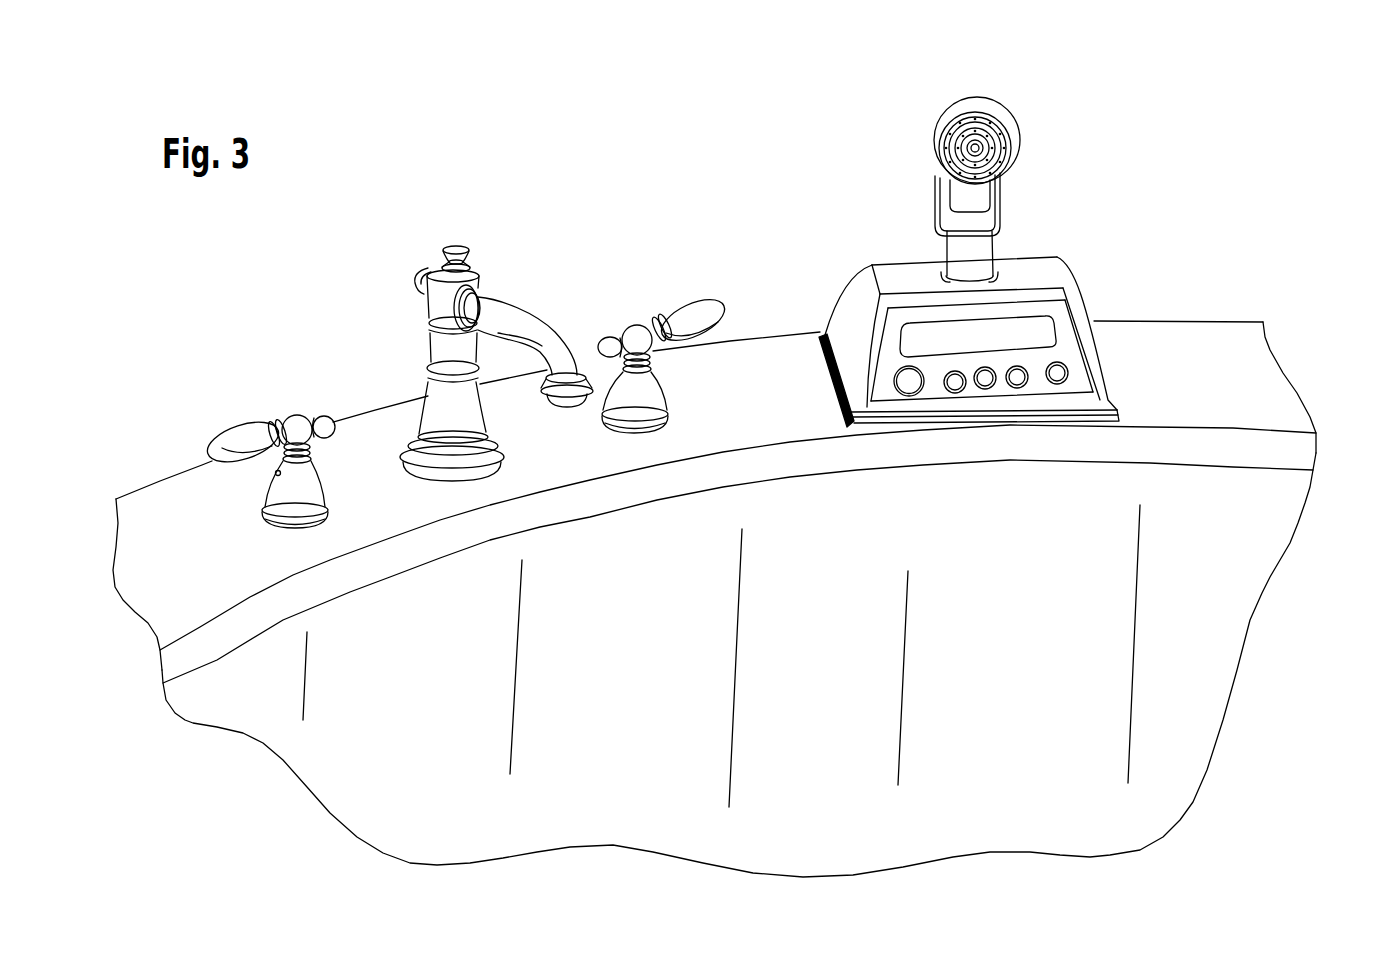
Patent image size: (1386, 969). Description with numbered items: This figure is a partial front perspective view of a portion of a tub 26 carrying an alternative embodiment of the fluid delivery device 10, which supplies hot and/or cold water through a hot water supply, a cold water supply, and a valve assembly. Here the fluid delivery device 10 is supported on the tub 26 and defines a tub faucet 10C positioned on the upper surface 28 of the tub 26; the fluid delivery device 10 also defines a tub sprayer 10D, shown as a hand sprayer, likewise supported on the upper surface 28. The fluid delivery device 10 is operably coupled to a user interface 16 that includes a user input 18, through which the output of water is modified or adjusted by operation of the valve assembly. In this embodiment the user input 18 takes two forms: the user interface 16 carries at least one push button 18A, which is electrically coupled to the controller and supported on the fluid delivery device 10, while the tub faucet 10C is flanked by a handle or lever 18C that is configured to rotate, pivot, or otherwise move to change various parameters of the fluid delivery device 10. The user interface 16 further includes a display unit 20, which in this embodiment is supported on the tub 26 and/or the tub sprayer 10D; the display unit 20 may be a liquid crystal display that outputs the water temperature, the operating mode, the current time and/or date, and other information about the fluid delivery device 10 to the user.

The fluid delivery device 10 is at (702, 281).
The tub faucet 10C is at (530, 325).
The tub sprayer 10D is at (945, 143).
The user interface 16 is at (1000, 316).
The user input 18 is at (688, 312).
The push button 18A is at (903, 376).
The handle or lever 18C is at (243, 433).
The display unit 20 is at (1003, 333).
The tub 26 is at (1242, 553).
The upper surface 28 is at (1234, 364).